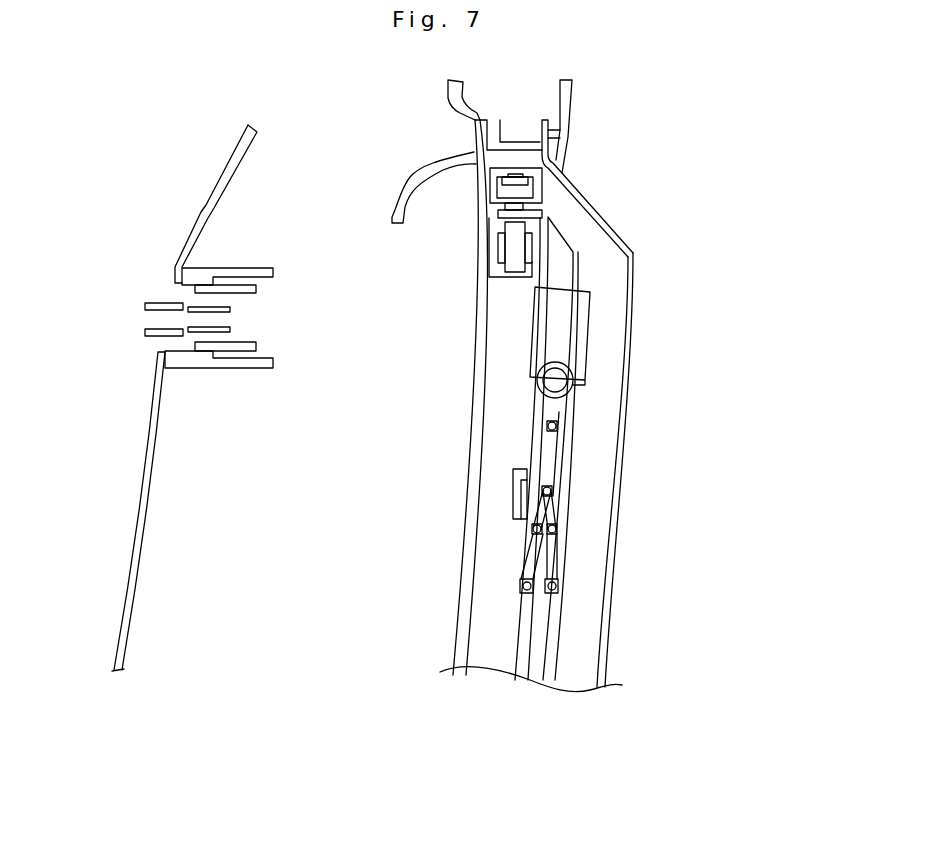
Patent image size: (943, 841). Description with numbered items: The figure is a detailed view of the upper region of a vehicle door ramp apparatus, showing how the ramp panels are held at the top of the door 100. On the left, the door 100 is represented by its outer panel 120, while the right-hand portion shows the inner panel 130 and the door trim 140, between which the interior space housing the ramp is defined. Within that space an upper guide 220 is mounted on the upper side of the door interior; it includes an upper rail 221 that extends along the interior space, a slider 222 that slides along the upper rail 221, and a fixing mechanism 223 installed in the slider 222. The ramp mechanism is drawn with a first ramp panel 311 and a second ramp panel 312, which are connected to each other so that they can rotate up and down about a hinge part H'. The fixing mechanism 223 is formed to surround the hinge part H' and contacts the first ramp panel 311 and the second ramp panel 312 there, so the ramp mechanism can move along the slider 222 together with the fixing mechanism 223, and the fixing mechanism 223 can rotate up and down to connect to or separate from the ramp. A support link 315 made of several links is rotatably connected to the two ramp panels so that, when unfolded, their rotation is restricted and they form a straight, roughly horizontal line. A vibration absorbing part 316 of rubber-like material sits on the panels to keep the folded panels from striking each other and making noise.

The door 100 is at (143, 400).
The outer panel 120 is at (210, 198).
The inner panel 130 is at (463, 605).
The door trim 140 is at (622, 448).
The upper guide 220 is at (617, 232).
The upper rail 221 is at (548, 217).
The slider 222 is at (533, 270).
The fixing mechanism 223 is at (634, 331).
The hinge part H' is at (629, 380).
The first ramp panel 311 is at (552, 637).
The second ramp panel 312 is at (522, 633).
The support link 315 is at (553, 562).
The vibration absorbing part 316 is at (515, 492).